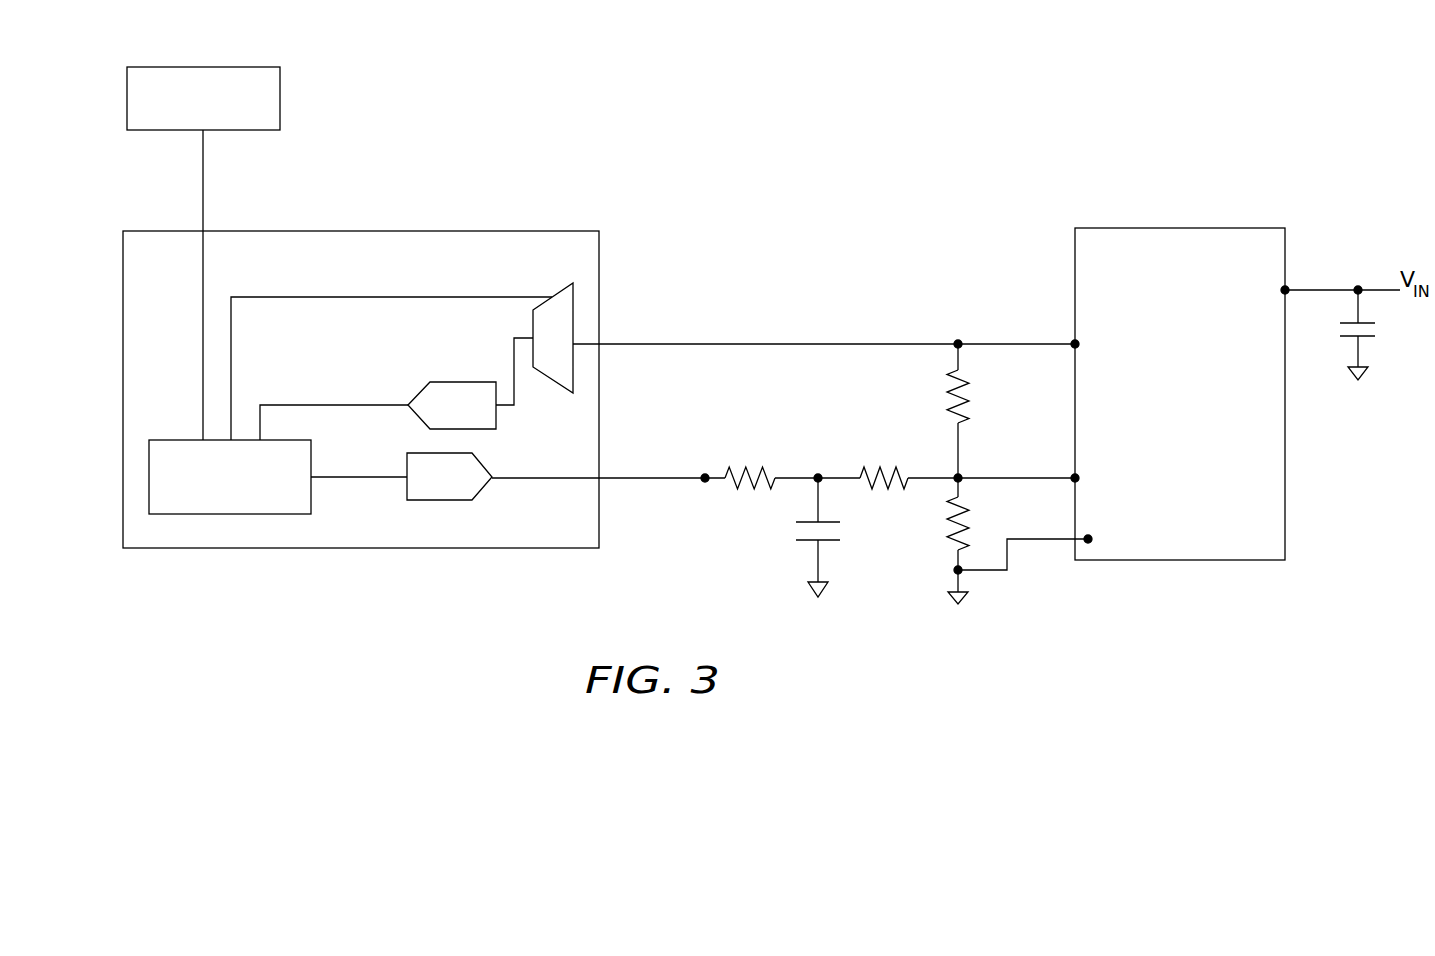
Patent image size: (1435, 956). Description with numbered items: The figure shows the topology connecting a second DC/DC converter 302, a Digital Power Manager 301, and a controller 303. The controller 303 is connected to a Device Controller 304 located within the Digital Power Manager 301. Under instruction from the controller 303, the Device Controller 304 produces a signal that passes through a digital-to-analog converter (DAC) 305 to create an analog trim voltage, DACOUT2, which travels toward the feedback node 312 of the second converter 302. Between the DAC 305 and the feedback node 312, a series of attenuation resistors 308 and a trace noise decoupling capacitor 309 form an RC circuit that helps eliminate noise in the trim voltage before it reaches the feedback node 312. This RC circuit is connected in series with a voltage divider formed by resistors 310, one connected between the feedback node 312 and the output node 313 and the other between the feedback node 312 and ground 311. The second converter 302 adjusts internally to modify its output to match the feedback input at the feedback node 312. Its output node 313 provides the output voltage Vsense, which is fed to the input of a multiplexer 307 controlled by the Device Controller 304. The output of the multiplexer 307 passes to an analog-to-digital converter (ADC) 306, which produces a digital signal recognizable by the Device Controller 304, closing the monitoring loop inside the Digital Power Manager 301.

The Digital Power Manager 301 is at (457, 229).
The second converter 302 is at (1180, 226).
The controller 303 is at (283, 97).
The Device Controller 304 is at (313, 497).
The digital-to-analog converter (DAC) 305 is at (487, 467).
The analog-to-digital converter (ADC) 306 is at (415, 392).
The multiplexer 307 is at (576, 303).
The attenuation resistors 308 is at (871, 465).
The trace noise decoupling capacitor 309 is at (848, 544).
The resistors 310 is at (973, 398).
The ground 311 is at (1071, 543).
The feedback node 312 is at (1130, 466).
The output node 313 is at (1132, 363).